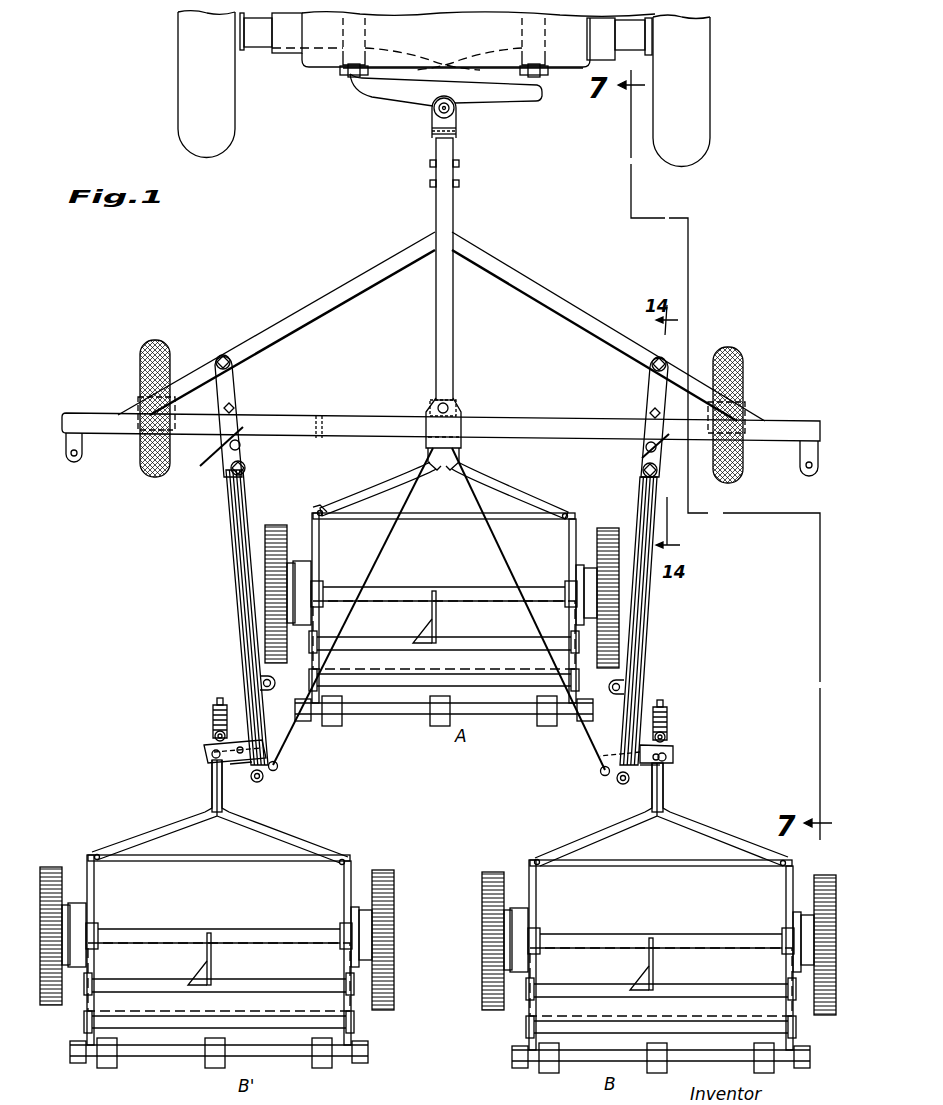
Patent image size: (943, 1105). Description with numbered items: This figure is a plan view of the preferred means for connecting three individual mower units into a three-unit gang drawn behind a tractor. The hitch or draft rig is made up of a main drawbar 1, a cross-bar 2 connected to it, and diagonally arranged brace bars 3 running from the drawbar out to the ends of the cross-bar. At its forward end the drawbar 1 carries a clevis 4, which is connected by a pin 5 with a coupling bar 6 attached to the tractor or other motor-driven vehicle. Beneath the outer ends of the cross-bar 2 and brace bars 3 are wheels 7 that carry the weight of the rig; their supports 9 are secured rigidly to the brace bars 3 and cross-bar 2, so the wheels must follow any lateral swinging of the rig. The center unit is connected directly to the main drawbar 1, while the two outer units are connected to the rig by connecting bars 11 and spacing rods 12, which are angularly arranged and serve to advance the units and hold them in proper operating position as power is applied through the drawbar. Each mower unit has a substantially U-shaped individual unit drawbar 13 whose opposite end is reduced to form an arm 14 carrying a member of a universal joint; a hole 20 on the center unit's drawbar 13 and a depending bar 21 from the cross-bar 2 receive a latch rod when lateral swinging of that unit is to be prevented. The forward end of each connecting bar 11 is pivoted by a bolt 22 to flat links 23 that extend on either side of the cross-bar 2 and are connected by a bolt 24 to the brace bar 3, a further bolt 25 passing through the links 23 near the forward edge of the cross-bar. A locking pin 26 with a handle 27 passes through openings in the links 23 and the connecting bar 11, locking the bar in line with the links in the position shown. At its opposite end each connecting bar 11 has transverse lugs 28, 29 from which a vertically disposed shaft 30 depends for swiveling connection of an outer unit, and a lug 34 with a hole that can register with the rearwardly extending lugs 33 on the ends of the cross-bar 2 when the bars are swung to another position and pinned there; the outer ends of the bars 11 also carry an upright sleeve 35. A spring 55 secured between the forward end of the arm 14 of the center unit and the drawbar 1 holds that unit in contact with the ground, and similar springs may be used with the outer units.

The main drawbar 1 is at (447, 226).
The cross-bar 2 is at (512, 422).
The brace bars 3 is at (344, 296).
The clevis 4 is at (432, 128).
The pin 5 is at (455, 110).
The coupling bar 6 is at (392, 92).
The wheels 7 is at (158, 340).
The supports 9 is at (138, 400).
The connecting bars 11 is at (236, 573).
The spacing rods 12 is at (368, 577).
The individual unit drawbar 13 is at (525, 492).
The arm 14 is at (212, 784).
The hole 20 is at (314, 513).
The depending bar 21 is at (320, 428).
The bolt 22 is at (245, 468).
The flat links 23 is at (240, 380).
The bolt 24 is at (224, 352).
The bolt 25 is at (236, 408).
The locking pin 26 is at (242, 445).
The handle 27 is at (646, 455).
The transverse lug 28 is at (243, 744).
The transverse lug 29 is at (238, 767).
The shaft 30 is at (211, 753).
The lugs 33 is at (66, 462).
The lug 34 is at (268, 690).
The upright sleeve 35 is at (264, 776).
The spring 55 is at (210, 722).